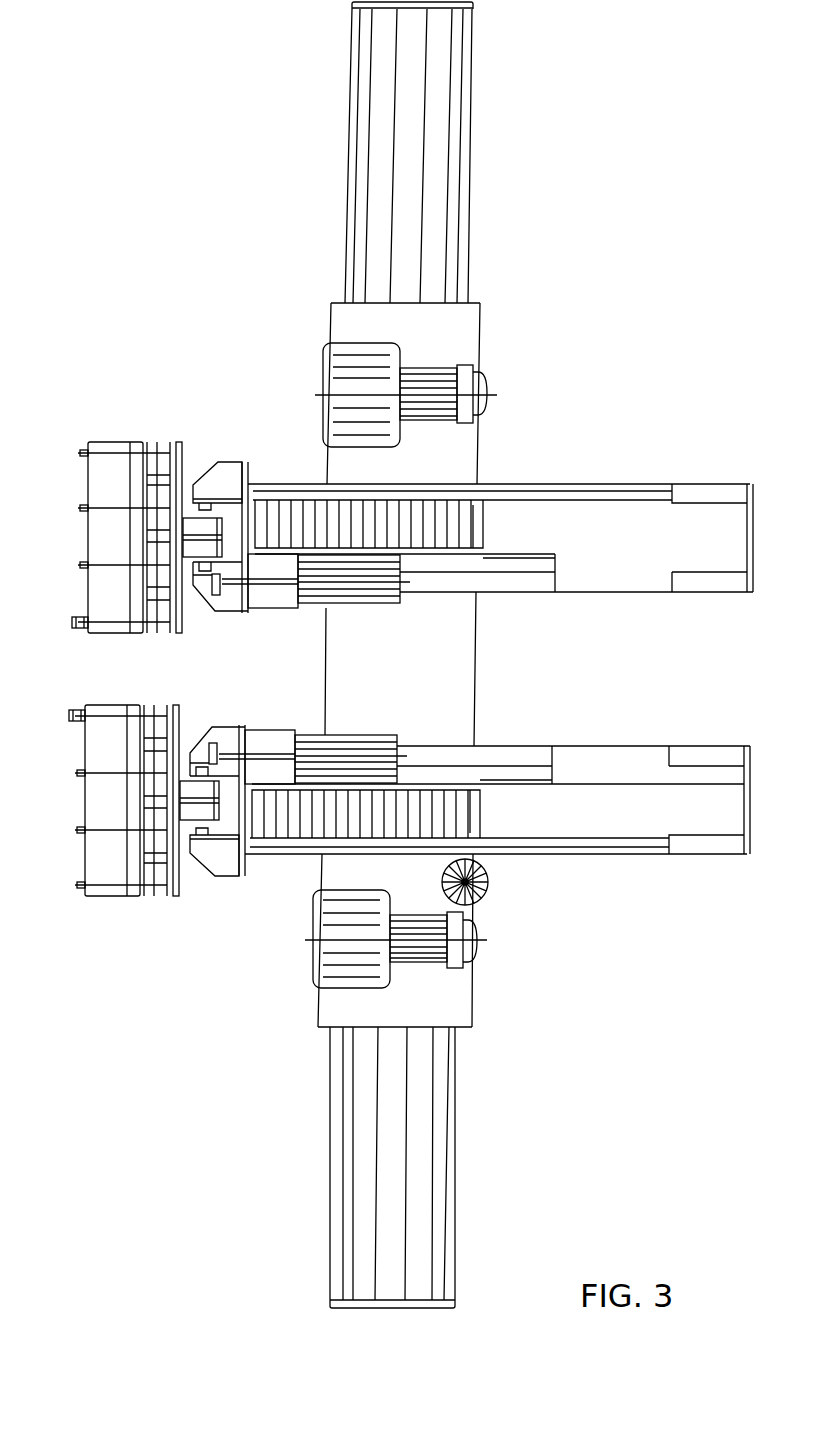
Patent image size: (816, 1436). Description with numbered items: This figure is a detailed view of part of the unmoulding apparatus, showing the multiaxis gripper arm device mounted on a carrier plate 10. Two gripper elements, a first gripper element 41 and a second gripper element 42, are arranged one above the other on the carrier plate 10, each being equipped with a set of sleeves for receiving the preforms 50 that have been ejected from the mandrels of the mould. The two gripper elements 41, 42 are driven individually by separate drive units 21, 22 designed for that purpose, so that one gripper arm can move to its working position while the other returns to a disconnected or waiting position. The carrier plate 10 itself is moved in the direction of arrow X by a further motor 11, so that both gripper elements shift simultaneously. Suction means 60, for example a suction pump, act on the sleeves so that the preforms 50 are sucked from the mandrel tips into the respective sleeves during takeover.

The carrier plate 10 is at (455, 667).
The further motor 11 is at (466, 881).
The drive unit 21 is at (325, 593).
The drive unit 22 is at (312, 737).
The gripper element 41 is at (121, 441).
The gripper element 42 is at (113, 898).
The preform 50 is at (77, 619).
The suction means 60 is at (487, 366).